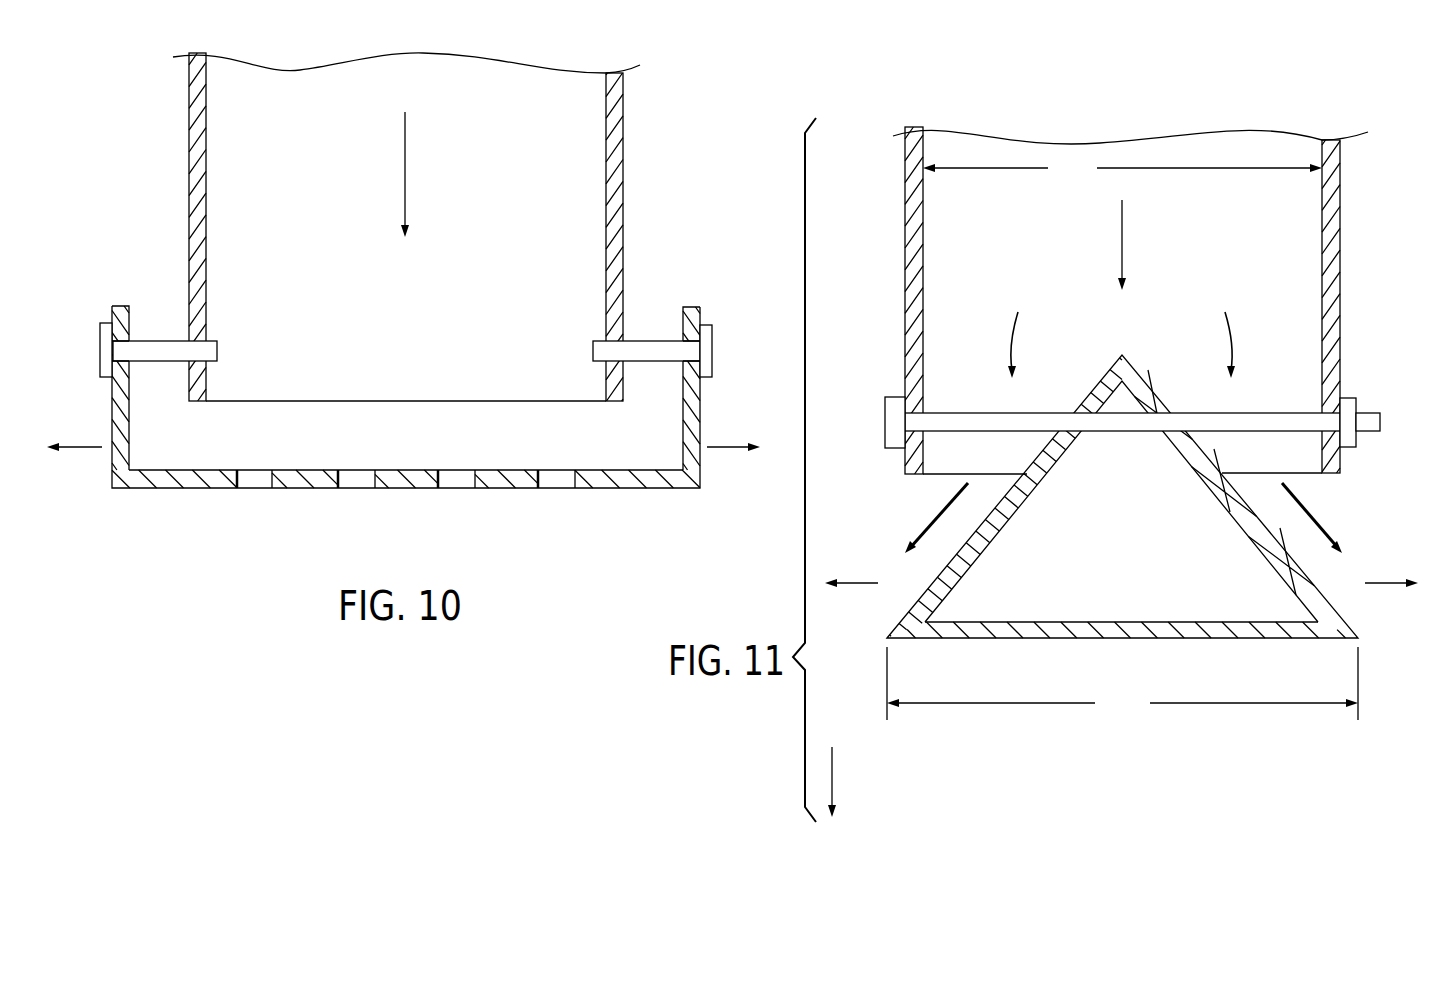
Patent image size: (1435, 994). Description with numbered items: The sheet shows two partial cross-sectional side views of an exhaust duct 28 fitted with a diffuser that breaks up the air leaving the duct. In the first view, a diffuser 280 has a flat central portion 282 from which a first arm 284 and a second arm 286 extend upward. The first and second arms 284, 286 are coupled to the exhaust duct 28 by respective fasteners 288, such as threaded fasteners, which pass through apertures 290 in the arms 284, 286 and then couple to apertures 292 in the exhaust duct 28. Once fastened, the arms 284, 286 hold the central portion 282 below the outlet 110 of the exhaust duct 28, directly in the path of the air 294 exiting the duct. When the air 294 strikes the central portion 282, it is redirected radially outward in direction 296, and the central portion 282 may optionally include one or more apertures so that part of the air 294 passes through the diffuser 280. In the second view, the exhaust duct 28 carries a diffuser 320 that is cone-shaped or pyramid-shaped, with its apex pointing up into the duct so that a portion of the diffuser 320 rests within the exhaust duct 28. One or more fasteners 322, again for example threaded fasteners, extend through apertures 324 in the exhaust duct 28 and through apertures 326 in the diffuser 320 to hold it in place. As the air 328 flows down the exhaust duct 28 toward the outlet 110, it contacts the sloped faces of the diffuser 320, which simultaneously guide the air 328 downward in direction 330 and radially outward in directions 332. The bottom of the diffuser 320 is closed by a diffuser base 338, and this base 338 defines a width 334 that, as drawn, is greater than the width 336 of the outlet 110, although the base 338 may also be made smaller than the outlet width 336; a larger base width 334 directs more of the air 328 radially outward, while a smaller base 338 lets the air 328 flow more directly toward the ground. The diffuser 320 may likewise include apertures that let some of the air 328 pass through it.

In FIG. 10, the exhaust duct 28 is at (615, 187).
In FIG. 11, the exhaust duct 28 is at (912, 203).
In FIG. 10, the outlet 110 is at (558, 403).
In FIG. 10, the diffuser 280 is at (287, 555).
In FIG. 10, the central portion 282 is at (165, 488).
In FIG. 10, the first arm 284 is at (112, 415).
In FIG. 10, the second arm 286 is at (702, 413).
In FIG. 10, the fasteners 288 is at (100, 352).
In FIG. 10, the apertures 290 is at (133, 350).
In FIG. 10, the apertures 292 is at (218, 347).
In FIG. 10, the air 294 is at (406, 170).
In FIG. 10, the direction 296 is at (84, 450).
In FIG. 11, the diffuser 320 is at (1060, 648).
In FIG. 11, the fasteners 322 is at (885, 420).
In FIG. 11, the apertures 324 is at (928, 414).
In FIG. 11, the apertures 326 is at (1140, 383).
In FIG. 11, the air 328 is at (1123, 230).
In FIG. 11, the direction 330 is at (833, 774).
In FIG. 11, the directions 332 is at (860, 586).
In FIG. 11, the width 334 is at (1122, 683).
In FIG. 11, the width 336 is at (1122, 169).
In FIG. 11, the deflector base plate 338 is at (1220, 642).